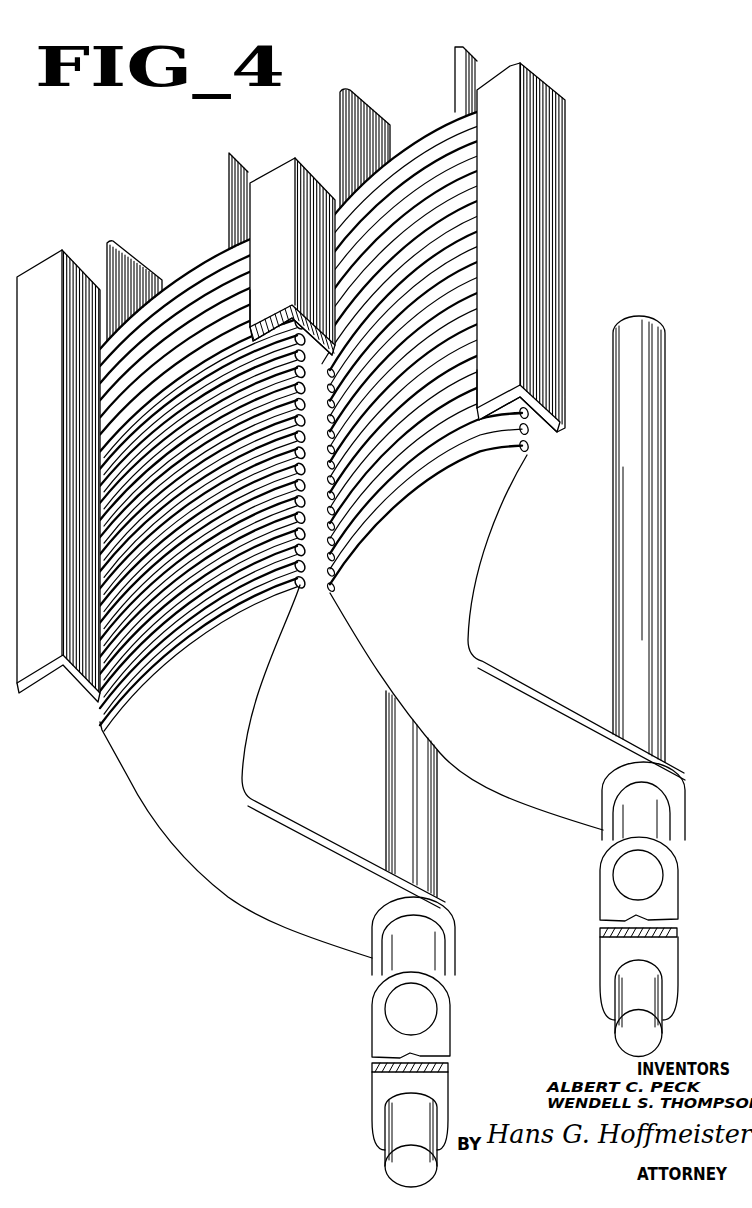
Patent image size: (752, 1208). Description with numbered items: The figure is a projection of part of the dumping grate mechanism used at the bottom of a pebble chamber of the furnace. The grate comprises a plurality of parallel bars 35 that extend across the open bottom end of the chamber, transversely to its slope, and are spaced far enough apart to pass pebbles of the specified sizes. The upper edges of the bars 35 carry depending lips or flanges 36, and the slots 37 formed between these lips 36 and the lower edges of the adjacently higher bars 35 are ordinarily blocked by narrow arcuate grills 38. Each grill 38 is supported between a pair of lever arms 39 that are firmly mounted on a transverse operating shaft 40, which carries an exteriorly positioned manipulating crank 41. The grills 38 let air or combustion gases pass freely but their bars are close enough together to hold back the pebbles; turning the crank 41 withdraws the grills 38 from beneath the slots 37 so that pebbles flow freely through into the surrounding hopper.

The parallel bars 35 is at (53, 334).
The depending lips or flanges 36 is at (88, 657).
The slots 37 is at (182, 265).
The arcuate grills 38 is at (213, 325).
The lever arms 39 is at (202, 766).
The transverse operating shaft 40 is at (427, 960).
The manipulating crank 41 is at (383, 1110).